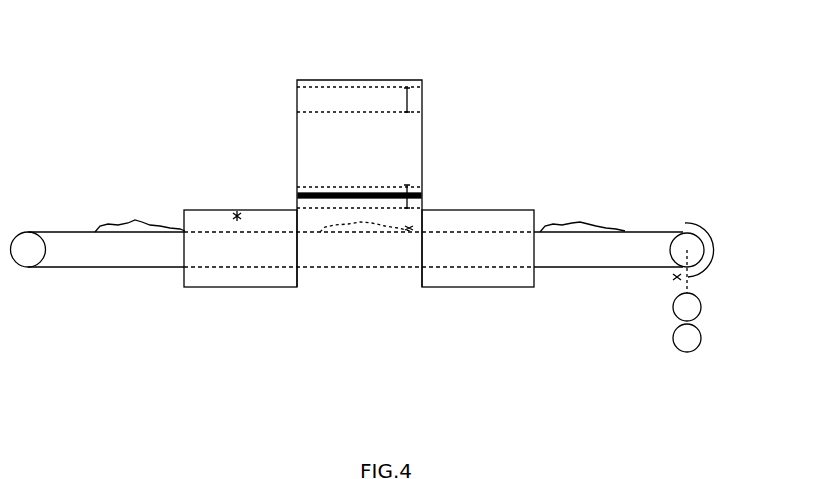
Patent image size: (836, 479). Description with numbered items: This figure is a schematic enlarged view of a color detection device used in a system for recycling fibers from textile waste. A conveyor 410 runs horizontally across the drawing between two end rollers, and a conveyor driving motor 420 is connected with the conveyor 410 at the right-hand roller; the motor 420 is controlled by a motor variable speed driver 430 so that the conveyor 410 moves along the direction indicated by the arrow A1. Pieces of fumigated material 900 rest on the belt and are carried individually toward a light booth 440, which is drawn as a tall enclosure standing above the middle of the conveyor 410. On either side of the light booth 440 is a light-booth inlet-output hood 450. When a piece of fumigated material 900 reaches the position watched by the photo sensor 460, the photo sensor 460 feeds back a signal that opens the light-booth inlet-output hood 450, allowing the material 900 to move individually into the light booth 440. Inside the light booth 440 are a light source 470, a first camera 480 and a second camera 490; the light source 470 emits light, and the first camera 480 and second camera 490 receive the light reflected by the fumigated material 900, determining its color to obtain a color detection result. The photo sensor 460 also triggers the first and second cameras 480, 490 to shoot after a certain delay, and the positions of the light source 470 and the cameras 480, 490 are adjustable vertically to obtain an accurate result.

The conveyor 410 is at (655, 229).
The conveyor driving motor 420 is at (700, 297).
The motor variable speed driver 430 is at (700, 332).
The light booth 440 is at (422, 156).
The light-booth inlet-output hood 450 is at (280, 210).
The photo sensor 460 is at (236, 214).
The light source 470 is at (422, 192).
The first camera 480 is at (380, 98).
The second camera 490 is at (353, 94).
The fumigated material 900 is at (588, 226).
The arrow indicating conveyor moving direction A1 is at (165, 223).